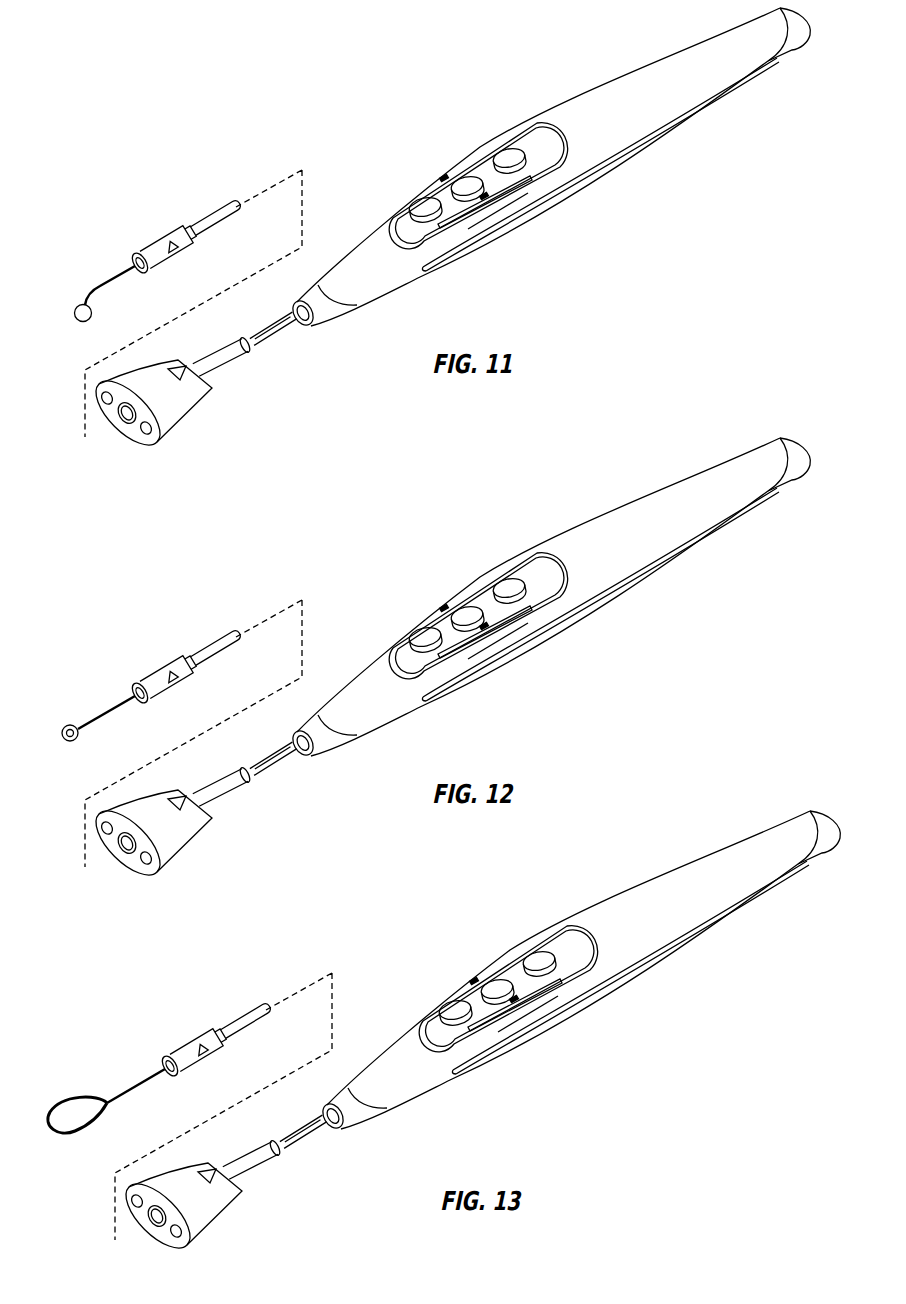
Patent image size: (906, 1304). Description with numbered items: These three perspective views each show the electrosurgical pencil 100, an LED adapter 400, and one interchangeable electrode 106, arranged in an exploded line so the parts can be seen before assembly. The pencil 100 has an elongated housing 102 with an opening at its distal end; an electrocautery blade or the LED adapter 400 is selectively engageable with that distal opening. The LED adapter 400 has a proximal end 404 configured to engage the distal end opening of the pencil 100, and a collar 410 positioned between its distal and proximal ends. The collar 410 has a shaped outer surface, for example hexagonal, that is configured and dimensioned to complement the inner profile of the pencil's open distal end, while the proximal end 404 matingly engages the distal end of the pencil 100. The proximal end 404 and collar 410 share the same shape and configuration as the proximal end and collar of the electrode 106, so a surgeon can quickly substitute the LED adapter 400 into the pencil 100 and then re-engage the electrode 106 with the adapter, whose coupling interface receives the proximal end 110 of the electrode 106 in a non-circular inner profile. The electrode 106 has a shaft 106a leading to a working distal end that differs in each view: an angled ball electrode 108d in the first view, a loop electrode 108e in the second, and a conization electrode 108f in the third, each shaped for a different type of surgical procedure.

In FIG. 11, the electrosurgical pencil 100 is at (399, 107).
In FIG. 12, the electrosurgical pencil 100 is at (448, 675).
In FIG. 13, the electrosurgical pencil 100 is at (478, 1048).
In FIG. 11, the elongated housing 102 is at (565, 199).
In FIG. 12, the elongated housing 102 is at (550, 598).
In FIG. 13, the elongated housing 102 is at (580, 971).
In FIG. 11, the electrode 106 is at (131, 220).
In FIG. 12, the electrode 106 is at (140, 702).
In FIG. 13, the electrode 106 is at (159, 1084).
In FIG. 11, the tip shaft 106a is at (117, 270).
In FIG. 12, the tip shaft 106a is at (87, 696).
In FIG. 13, the tip shaft 106a is at (113, 1072).
In FIG. 11, the angled ball electrode 108d is at (78, 322).
In FIG. 12, the loop electrode 108e is at (63, 764).
In FIG. 13, the conization electrode 108f is at (75, 1145).
In FIG. 11, the proximal end of electrode 110 is at (220, 210).
In FIG. 12, the proximal end of electrode 110 is at (187, 654).
In FIG. 13, the proximal end of electrode 110 is at (217, 1027).
In FIG. 11, the LED adapter 400 is at (182, 443).
In FIG. 12, the LED adapter 400 is at (177, 851).
In FIG. 13, the LED adapter 400 is at (207, 1224).
In FIG. 11, the proximal end of LED adapter 404 is at (268, 331).
In FIG. 12, the proximal end of LED adapter 404 is at (299, 770).
In FIG. 13, the proximal end of LED adapter 404 is at (329, 1143).
In FIG. 11, the collar 410 is at (217, 363).
In FIG. 12, the collar 410 is at (245, 795).
In FIG. 13, the collar 410 is at (275, 1168).